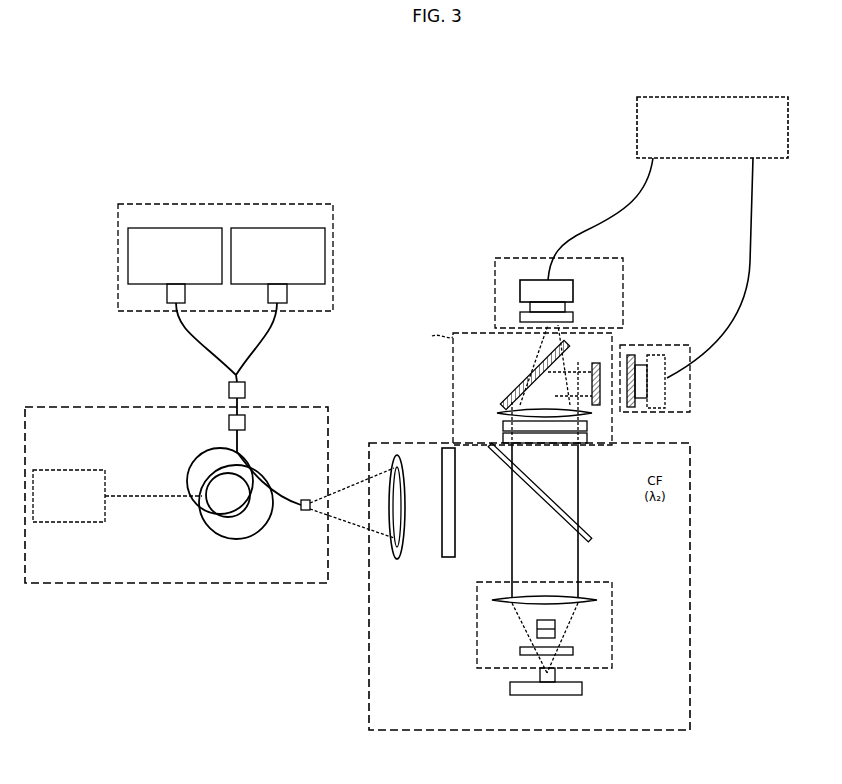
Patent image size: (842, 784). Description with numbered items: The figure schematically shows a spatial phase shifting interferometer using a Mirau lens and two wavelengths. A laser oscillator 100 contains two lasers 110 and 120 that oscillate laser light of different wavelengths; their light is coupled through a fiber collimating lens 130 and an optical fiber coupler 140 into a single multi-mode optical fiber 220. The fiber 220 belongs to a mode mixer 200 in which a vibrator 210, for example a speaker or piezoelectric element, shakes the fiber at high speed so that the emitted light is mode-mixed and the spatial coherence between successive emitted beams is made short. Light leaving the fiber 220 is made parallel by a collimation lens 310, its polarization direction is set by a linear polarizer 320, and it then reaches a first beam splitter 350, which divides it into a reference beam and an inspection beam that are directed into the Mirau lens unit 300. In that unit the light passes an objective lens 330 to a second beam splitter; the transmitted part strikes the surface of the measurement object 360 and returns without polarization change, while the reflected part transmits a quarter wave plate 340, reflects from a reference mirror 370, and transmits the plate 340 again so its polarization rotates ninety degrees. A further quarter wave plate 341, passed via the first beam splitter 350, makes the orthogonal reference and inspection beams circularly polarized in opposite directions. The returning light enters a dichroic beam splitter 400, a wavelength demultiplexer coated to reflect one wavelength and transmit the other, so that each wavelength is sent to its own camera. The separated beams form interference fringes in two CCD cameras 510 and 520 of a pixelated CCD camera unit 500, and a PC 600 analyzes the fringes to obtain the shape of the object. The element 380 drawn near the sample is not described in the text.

The laser oscillator 100 is at (238, 204).
The first laser 110 is at (197, 226).
The second laser 120 is at (305, 228).
The fiber collimating lens 130 is at (167, 295).
The optical fiber coupler 140 is at (229, 389).
The mode mixer 200 is at (45, 407).
The vibrator 210 is at (92, 470).
The multi-mode optical fiber 220 is at (247, 445).
The Mirau lens unit 300 is at (369, 655).
The collimation lens 310 is at (397, 454).
The linear polarizer 320 is at (447, 448).
The objective lens 330 is at (495, 600).
The quarter wave plate 340 is at (537, 631).
The quarter wave plate 341 is at (603, 408).
The first beam splitter 350 is at (592, 538).
The measurement object 360 is at (540, 675).
The reference mirror 370 is at (527, 624).
The sample holder 380 is at (520, 651).
The dichroic beam splitter 400 is at (503, 387).
The pixelated CCD camera unit 500 is at (630, 322).
The CCD camera 510 is at (520, 290).
The CCD camera 520 is at (690, 396).
The PC 600 is at (637, 133).